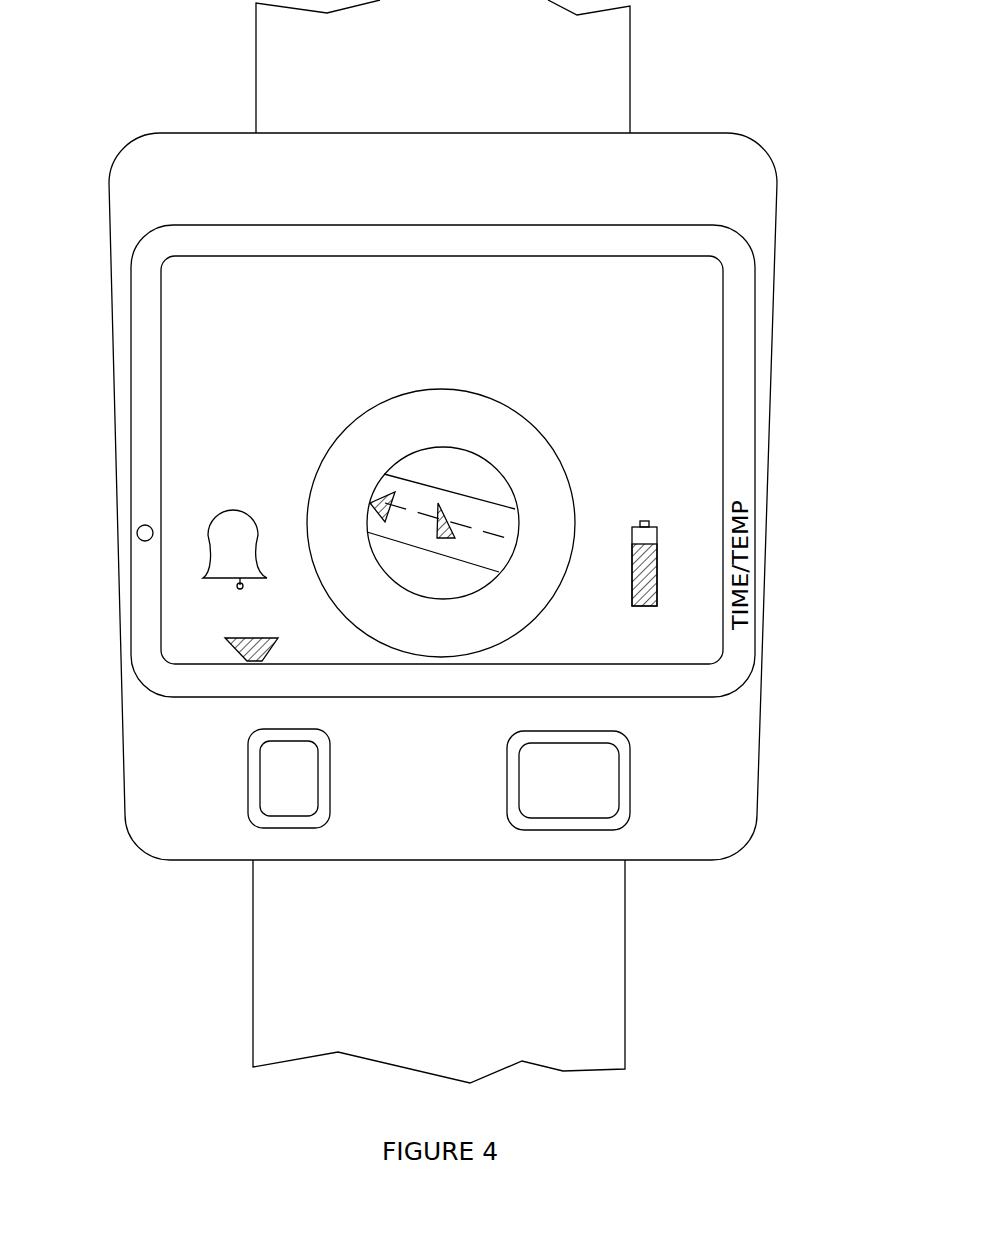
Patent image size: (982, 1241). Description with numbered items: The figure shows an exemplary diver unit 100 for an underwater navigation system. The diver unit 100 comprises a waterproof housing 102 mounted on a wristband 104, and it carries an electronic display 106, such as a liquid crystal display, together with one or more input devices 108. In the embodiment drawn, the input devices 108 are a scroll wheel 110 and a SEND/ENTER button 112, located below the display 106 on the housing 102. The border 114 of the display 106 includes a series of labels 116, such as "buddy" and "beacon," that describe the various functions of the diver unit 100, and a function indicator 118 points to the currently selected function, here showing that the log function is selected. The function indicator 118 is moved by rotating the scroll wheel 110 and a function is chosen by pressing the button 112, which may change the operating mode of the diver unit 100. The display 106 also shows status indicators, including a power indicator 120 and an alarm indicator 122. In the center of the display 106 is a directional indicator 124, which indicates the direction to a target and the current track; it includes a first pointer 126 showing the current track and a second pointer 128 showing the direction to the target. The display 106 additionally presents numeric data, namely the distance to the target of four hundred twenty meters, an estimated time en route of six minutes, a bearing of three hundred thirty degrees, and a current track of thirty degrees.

The diver unit 100 is at (484, 541).
The waterproof housing 102 is at (777, 235).
The wristband 104 is at (577, 62).
The electronic display 106 is at (693, 637).
The input devices 108 is at (338, 835).
The scroll wheel 110 is at (288, 798).
The SEND/ENTER button 112 is at (568, 800).
The border 114 is at (147, 295).
The labels 116 is at (745, 328).
The function indicator 118 is at (237, 638).
The power indicator 120 is at (657, 527).
The alarm indicator 122 is at (207, 548).
The directional indicator 124 is at (580, 508).
The first pointer 126 is at (445, 508).
The second pointer 128 is at (380, 503).